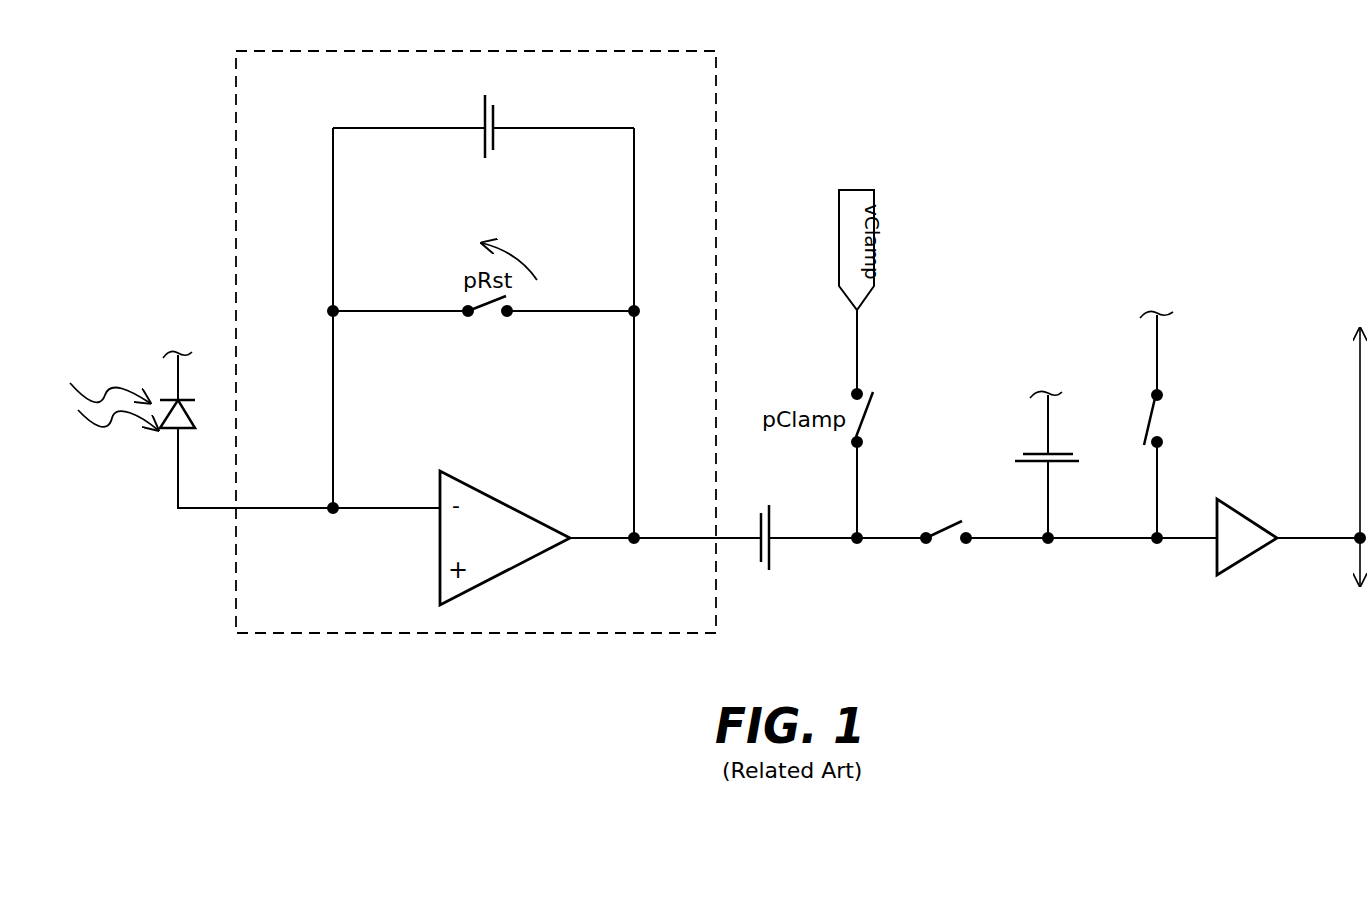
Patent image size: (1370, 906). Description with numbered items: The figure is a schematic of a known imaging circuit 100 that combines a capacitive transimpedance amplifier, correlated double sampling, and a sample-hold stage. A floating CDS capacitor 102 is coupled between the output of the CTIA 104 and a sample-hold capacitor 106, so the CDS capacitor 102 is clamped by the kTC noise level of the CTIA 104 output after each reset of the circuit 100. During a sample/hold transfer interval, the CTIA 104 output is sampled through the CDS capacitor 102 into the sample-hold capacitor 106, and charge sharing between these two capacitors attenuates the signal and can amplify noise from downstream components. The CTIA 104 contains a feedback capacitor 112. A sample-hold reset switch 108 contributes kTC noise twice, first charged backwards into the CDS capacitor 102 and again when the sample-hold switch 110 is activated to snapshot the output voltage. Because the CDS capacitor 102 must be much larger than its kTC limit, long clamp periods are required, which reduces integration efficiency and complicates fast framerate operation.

The circuit 100 is at (1048, 168).
The floating CDS capacitor 102 is at (770, 548).
The CTIA 104 is at (722, 52).
The sample-hold capacitor 106 is at (1058, 455).
The sample-hold reset switch 108 is at (1157, 418).
The sample-hold switch 110 is at (945, 537).
The feedback capacitor 112 is at (483, 103).